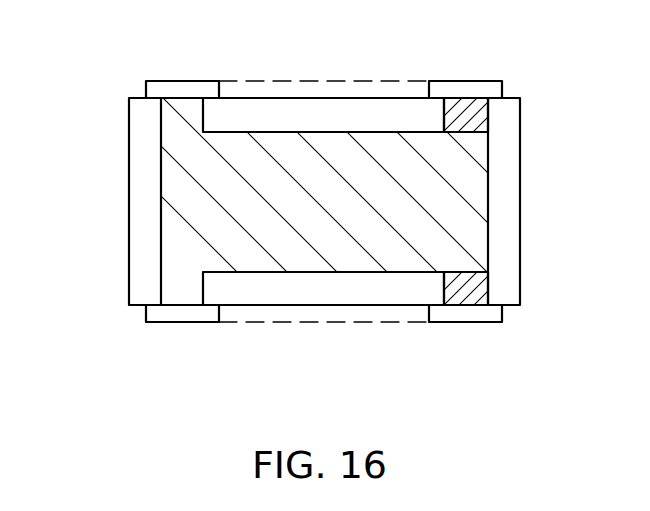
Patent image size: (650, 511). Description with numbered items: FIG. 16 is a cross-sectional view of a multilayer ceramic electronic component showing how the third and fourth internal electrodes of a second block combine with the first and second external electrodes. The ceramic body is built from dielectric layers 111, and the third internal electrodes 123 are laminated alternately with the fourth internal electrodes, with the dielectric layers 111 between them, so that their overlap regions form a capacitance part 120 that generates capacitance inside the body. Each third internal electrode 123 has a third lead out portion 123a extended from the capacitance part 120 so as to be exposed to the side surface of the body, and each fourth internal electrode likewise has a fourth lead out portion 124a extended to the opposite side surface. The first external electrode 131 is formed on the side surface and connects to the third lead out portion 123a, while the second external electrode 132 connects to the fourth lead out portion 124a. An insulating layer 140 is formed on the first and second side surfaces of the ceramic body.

The dielectric layer 111 is at (255, 110).
The capacitance part 120 is at (488, 208).
The third internal electrode 123 is at (177, 193).
The third lead out portion 123a is at (177, 287).
The fourth lead out portion 124a is at (474, 287).
The first external electrode 131 is at (180, 90).
The second external electrode 132 is at (462, 90).
The insulating layer 140 is at (302, 90).